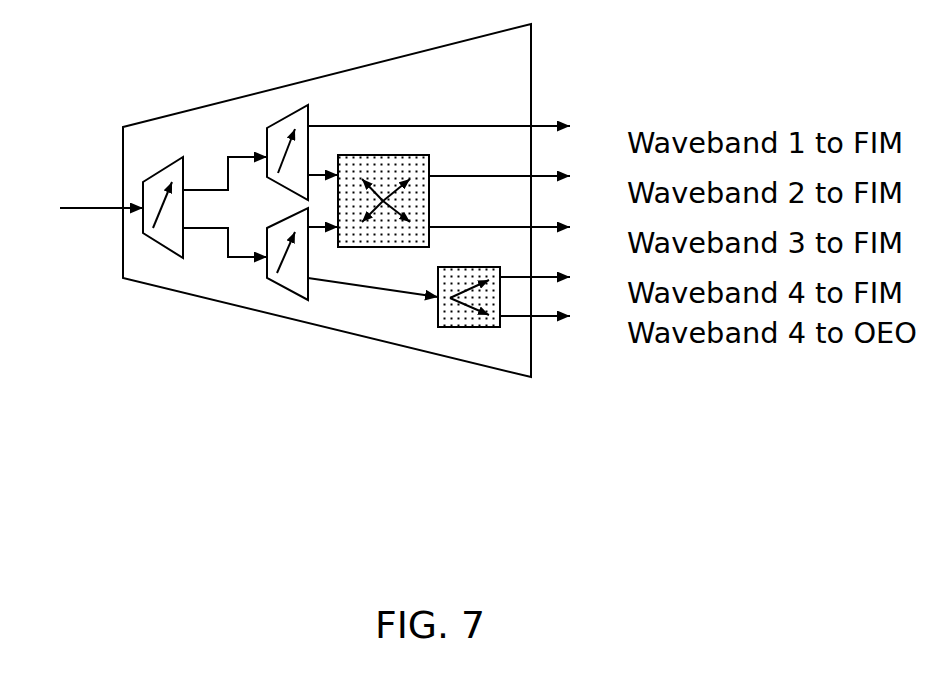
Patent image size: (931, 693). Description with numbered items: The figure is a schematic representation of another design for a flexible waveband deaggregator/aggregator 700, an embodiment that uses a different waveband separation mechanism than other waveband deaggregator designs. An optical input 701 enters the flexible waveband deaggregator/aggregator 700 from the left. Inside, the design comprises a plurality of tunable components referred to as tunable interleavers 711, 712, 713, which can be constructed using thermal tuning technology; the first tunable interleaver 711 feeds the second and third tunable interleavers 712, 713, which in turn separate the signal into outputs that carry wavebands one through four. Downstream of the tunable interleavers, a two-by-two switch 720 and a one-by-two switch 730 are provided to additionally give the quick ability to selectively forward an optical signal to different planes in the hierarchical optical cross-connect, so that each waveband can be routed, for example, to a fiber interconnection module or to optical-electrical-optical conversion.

The flexible waveband deaggregator/aggregator 700 is at (327, 210).
The input 701 is at (80, 195).
The tunable interleaver 711 is at (205, 197).
The tunable interleaver 712 is at (409, 150).
The tunable interleaver 713 is at (338, 255).
The 2×2 switch 720 is at (454, 190).
The 1×2 switch 730 is at (504, 309).